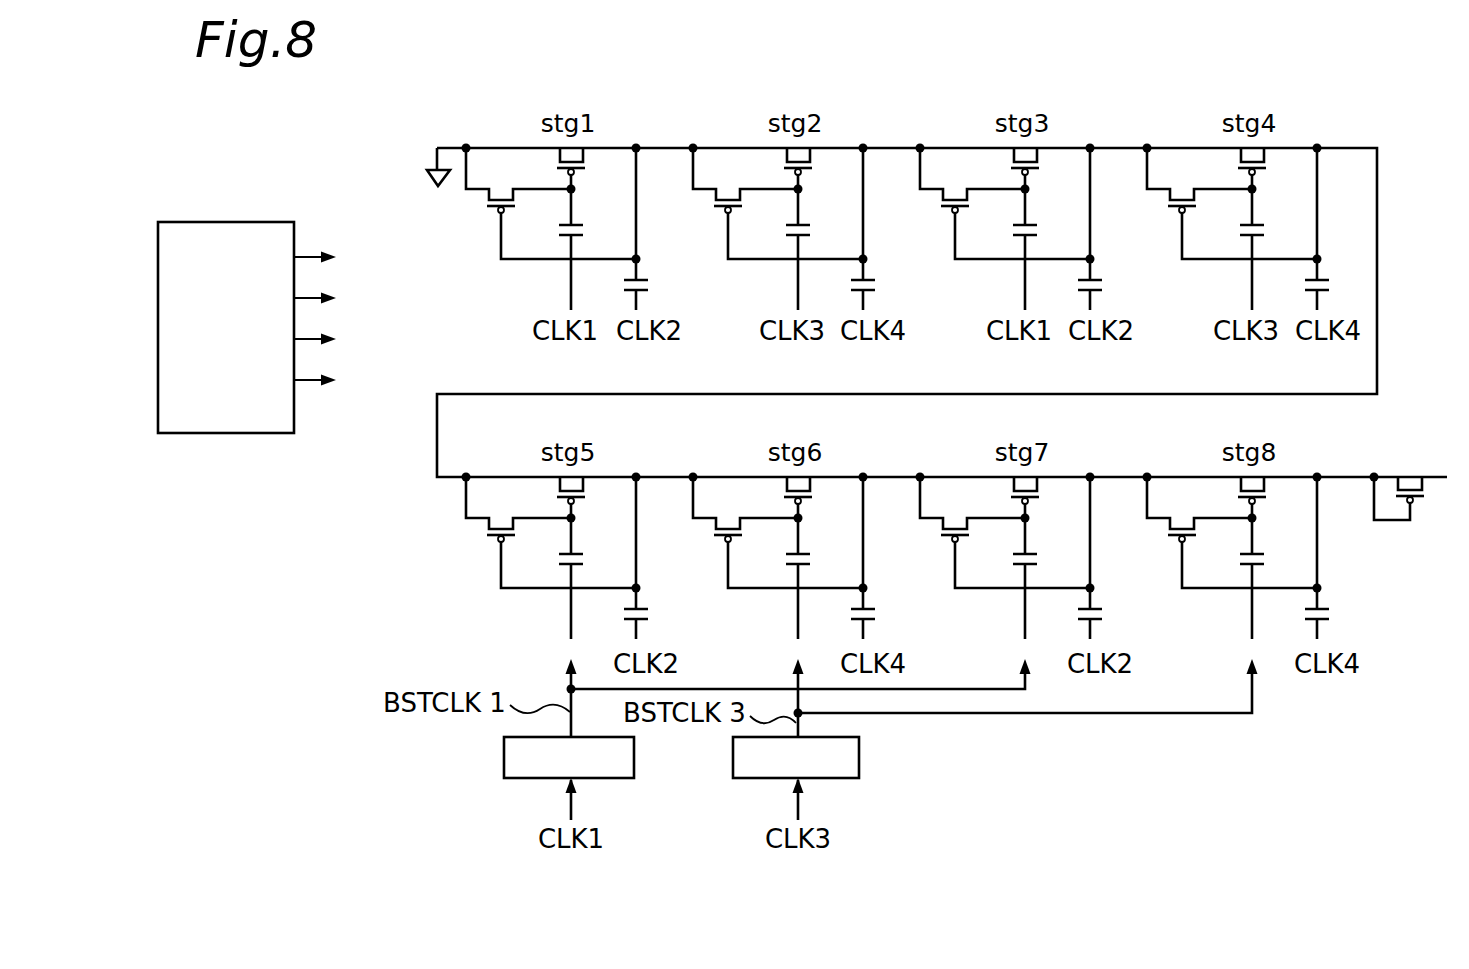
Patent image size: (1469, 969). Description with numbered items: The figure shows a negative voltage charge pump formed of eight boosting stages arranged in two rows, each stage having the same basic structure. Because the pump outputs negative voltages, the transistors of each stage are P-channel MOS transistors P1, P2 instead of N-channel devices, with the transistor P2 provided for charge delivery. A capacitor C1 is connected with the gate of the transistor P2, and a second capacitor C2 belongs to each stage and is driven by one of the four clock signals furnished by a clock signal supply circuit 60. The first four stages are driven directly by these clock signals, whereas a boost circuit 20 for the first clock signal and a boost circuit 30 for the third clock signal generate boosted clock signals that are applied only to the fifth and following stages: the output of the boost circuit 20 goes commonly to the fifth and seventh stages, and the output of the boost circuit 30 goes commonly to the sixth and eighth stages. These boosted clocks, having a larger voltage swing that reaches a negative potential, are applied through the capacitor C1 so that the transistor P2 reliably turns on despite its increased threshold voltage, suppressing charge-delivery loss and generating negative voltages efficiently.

The clock signal supply circuit 60 is at (224, 222).
The boost circuit 20 is at (636, 758).
The boost circuit 30 is at (861, 758).
The P-channel MOS transistor P1 is at (499, 190).
The P-channel MOS transistor P2 is at (586, 170).
The capacitor C1 is at (563, 230).
The capacitor C2 is at (650, 283).